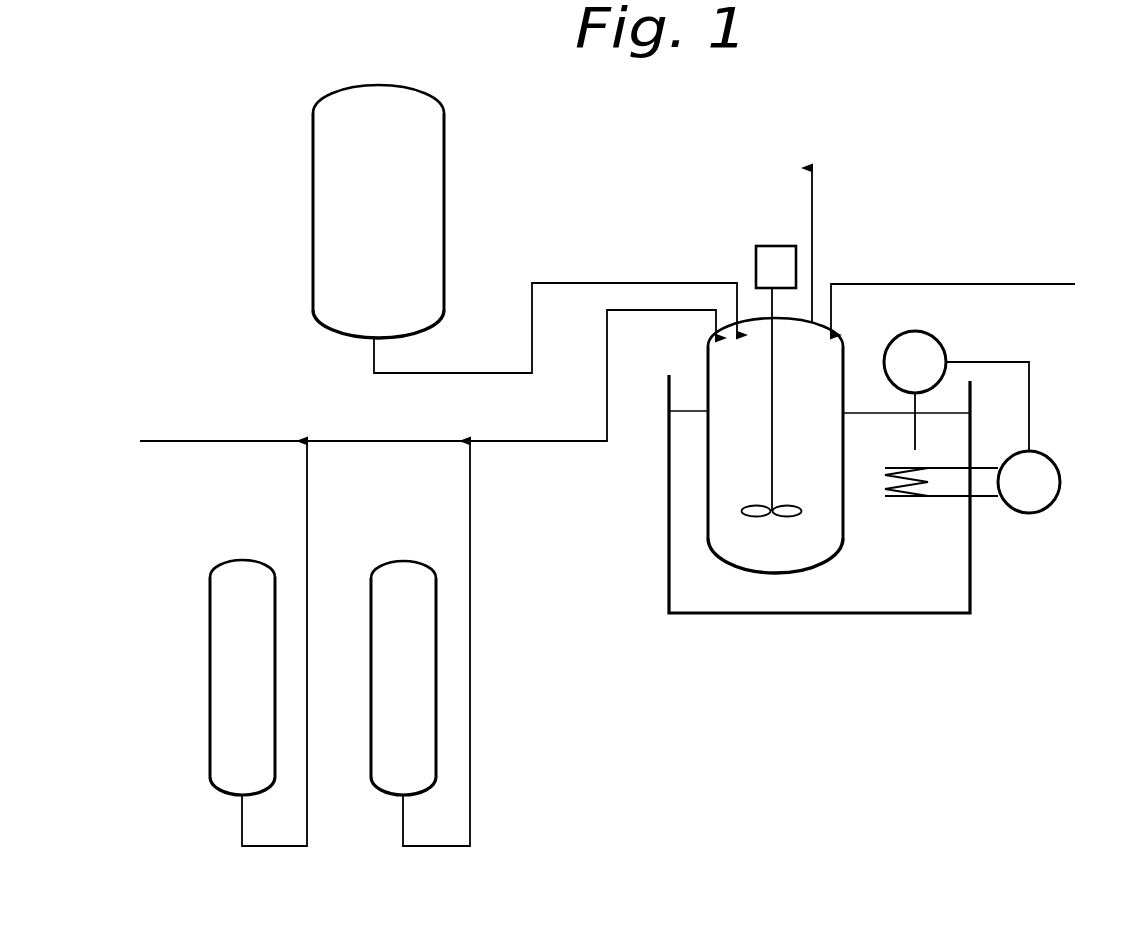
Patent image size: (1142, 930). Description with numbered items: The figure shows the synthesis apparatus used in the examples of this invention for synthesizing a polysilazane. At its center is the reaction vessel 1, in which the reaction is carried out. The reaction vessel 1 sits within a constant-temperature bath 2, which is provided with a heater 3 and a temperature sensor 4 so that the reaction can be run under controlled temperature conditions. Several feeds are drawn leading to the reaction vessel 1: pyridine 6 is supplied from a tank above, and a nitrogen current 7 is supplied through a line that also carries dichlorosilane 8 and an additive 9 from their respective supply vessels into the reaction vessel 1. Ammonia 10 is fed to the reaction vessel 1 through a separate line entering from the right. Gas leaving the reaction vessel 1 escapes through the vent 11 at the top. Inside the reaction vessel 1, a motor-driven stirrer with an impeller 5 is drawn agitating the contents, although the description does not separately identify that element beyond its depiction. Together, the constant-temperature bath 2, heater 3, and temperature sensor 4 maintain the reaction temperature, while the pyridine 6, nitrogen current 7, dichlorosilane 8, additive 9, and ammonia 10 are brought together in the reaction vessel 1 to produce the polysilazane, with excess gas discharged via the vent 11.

The reaction vessel 1 is at (719, 524).
The constant-temperature bath 2 is at (927, 600).
The heater 3 is at (950, 498).
The temperature sensor 4 is at (942, 335).
The stirrer impeller 5 is at (785, 517).
The pyridine 6 is at (433, 172).
The nitrogen current 7 is at (164, 441).
The dichlorosilane 8 is at (214, 698).
The additive 9 is at (376, 698).
The ammonia 10 is at (1020, 284).
The vent 11 is at (814, 207).